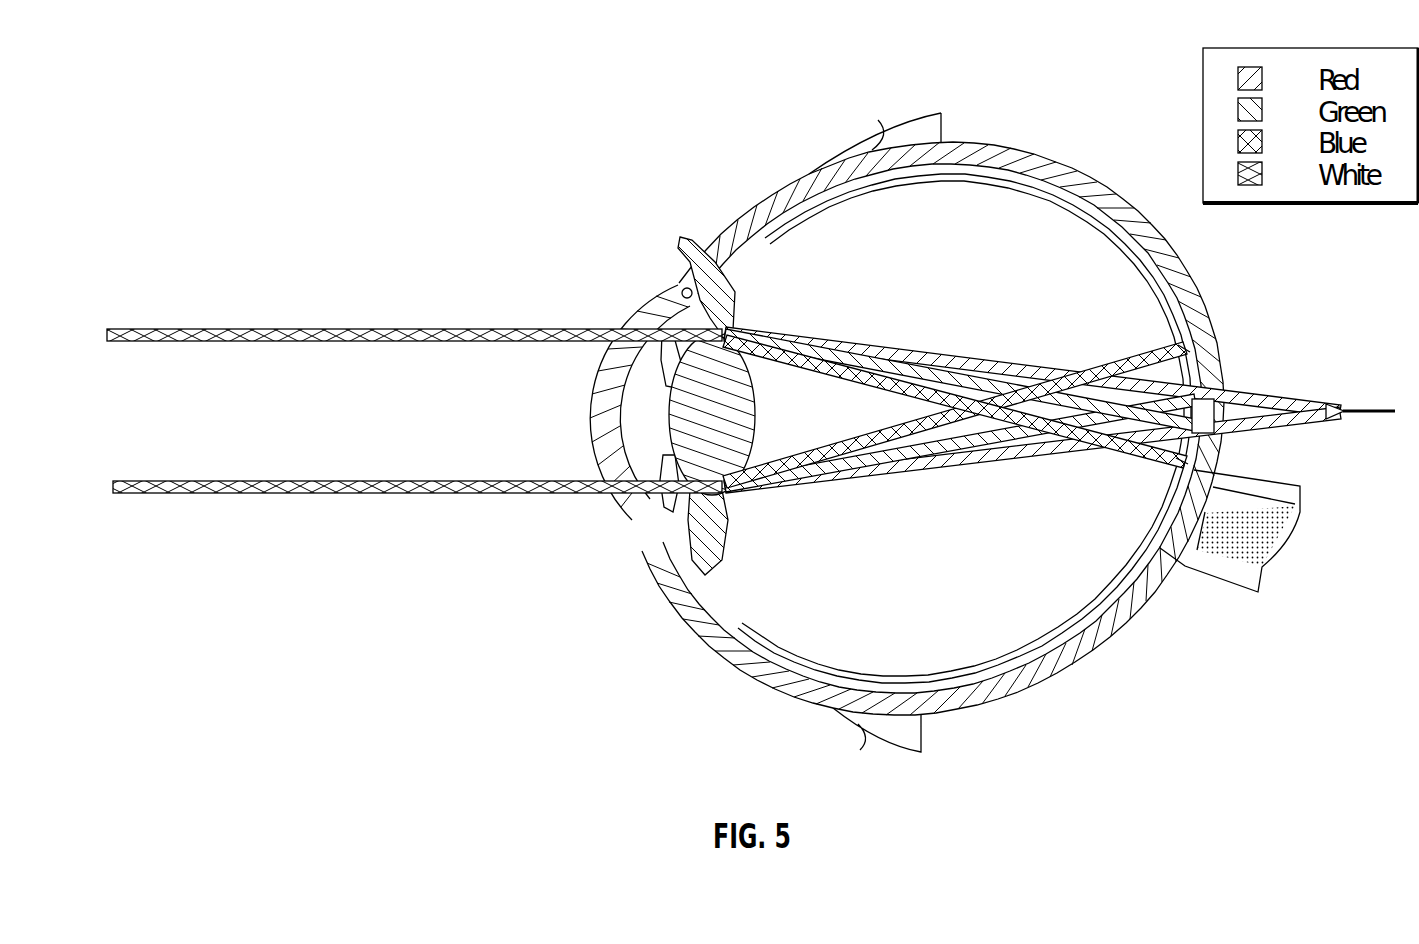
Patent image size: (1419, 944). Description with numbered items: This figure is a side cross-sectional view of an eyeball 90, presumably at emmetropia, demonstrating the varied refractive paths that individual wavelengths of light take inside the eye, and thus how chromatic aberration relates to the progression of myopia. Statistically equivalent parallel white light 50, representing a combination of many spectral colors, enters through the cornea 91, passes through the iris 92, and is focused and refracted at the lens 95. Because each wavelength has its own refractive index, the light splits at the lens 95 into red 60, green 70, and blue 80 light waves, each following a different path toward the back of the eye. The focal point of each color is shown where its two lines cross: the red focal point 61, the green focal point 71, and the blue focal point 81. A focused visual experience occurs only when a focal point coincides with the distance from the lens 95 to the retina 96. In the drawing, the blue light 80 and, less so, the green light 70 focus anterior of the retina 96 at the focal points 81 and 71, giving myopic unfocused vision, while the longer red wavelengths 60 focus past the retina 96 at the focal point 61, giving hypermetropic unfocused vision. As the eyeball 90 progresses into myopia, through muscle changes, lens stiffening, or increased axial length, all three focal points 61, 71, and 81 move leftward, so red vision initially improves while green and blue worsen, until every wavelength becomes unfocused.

The parallel white light 50 is at (233, 328).
The red light waves 60 is at (907, 353).
The red focal point 61 is at (1333, 414).
The green light waves 70 is at (960, 412).
The green focal point 71 is at (1013, 391).
The blue light waves 80 is at (899, 428).
The blue focal point 81 is at (1010, 428).
The eyeball 90 is at (1032, 148).
The cornea 91 is at (587, 418).
The iris 92 is at (668, 362).
The lens 95 is at (740, 432).
The retina 96 is at (1181, 348).